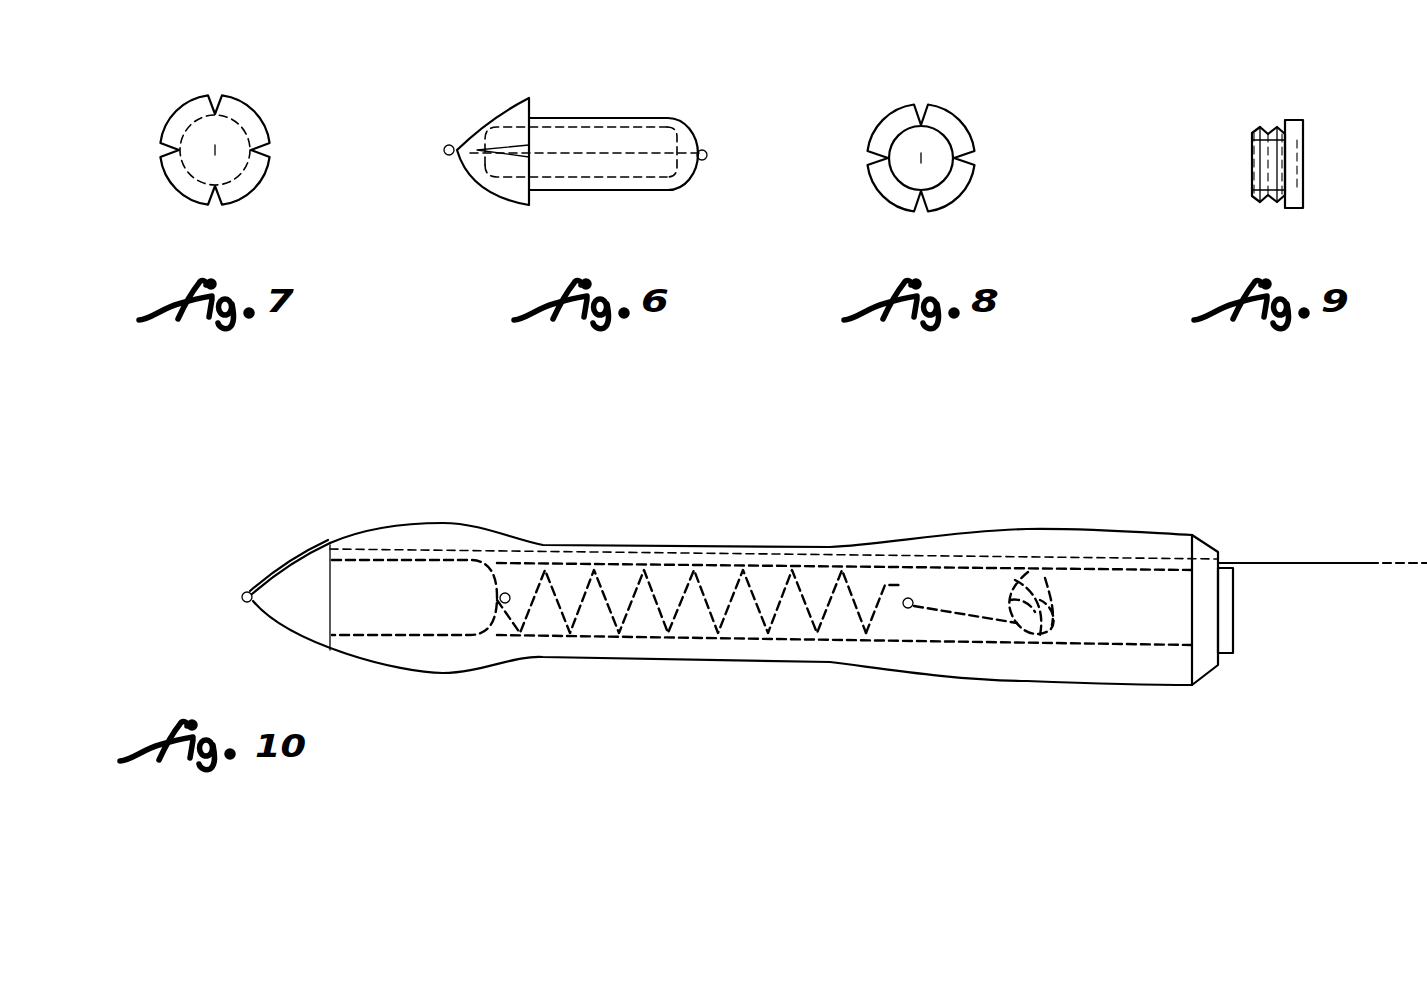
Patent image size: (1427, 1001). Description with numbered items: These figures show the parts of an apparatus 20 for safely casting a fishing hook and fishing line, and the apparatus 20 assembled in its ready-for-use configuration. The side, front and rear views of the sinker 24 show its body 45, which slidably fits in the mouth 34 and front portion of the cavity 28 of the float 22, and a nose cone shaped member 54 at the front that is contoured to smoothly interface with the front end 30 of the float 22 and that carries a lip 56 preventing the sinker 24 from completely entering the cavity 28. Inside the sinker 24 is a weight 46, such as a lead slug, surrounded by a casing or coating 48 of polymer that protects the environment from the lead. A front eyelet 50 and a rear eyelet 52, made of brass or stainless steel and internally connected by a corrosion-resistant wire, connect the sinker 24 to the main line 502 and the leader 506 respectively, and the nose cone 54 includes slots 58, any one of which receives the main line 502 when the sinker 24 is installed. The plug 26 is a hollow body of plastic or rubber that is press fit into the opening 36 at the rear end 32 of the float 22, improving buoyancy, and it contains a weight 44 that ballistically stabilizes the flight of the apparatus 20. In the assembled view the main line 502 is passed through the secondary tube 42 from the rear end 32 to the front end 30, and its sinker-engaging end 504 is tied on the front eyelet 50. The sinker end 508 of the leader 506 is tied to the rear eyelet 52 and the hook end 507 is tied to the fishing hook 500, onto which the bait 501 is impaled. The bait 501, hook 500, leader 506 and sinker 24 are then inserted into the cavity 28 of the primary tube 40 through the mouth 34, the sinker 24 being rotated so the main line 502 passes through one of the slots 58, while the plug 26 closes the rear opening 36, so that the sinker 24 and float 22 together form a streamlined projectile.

In FIG. 10, the apparatus 20 is at (703, 485).
In FIG. 10, the float 22 is at (805, 547).
In FIG. 7, the sinker 24 is at (160, 158).
In FIG. 6, the sinker 24 is at (616, 118).
In FIG. 8, the sinker 24 is at (972, 148).
In FIG. 10, the sinker 24 is at (405, 593).
In FIG. 9, the plug 26 is at (1296, 206).
In FIG. 10, the plug 26 is at (1233, 640).
In FIG. 10, the cavity 28 is at (613, 580).
In FIG. 10, the front end 30 is at (362, 528).
In FIG. 10, the rear end 32 is at (1215, 548).
In FIG. 10, the mouth 34 is at (336, 546).
In FIG. 10, the opening 36 is at (1208, 607).
In FIG. 10, the primary tube 40 is at (860, 665).
In FIG. 10, the secondary tube 42 is at (970, 563).
In FIG. 9, the weight 44 is at (1255, 188).
In FIG. 6, the body 45 is at (595, 192).
In FIG. 6, the weight 46 is at (677, 140).
In FIG. 6, the casing or coating 48 is at (538, 118).
In FIG. 7, the front eyelet 50 is at (215, 145).
In FIG. 6, the front eyelet 50 is at (444, 150).
In FIG. 10, the front eyelet 50 is at (245, 593).
In FIG. 6, the rear eyelet 52 is at (705, 160).
In FIG. 8, the rear eyelet 52 is at (922, 158).
In FIG. 10, the rear eyelet 52 is at (508, 594).
In FIG. 6, the nose cone shaped member 54 is at (503, 108).
In FIG. 10, the nose cone shaped member 54 is at (305, 598).
In FIG. 6, the lip 56 is at (530, 195).
In FIG. 7, the slots 58 is at (215, 112).
In FIG. 8, the slots 58 is at (921, 122).
In FIG. 10, the fishing hook 500 is at (1030, 635).
In FIG. 10, the bait 501 is at (1030, 573).
In FIG. 10, the main line 502 is at (283, 563).
In FIG. 10, the sinker-engaging end 504 is at (249, 592).
In FIG. 10, the leader 506 is at (702, 607).
In FIG. 10, the hook end 507 is at (900, 587).
In FIG. 10, the sinker end 508 is at (498, 610).